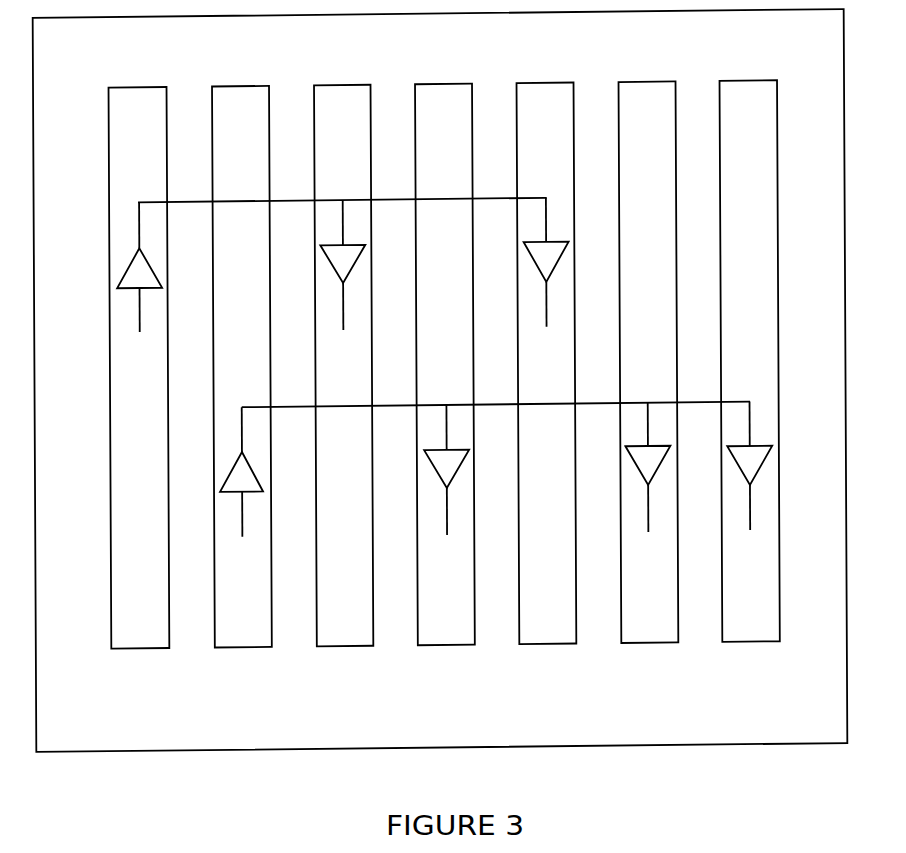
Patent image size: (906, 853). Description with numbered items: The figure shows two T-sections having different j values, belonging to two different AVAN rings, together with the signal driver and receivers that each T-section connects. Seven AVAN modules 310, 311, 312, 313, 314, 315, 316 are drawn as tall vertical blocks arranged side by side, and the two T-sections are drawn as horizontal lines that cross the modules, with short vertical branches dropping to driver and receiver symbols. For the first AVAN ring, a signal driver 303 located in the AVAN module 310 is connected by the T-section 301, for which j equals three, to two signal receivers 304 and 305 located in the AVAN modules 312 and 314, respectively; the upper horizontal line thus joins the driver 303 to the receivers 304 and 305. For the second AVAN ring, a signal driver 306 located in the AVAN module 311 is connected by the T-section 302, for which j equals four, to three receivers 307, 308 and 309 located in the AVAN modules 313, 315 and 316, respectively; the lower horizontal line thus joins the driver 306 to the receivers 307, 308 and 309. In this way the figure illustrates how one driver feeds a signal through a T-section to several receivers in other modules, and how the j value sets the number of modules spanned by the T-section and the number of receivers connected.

The T-section 301 is at (494, 199).
The T-section 302 is at (695, 405).
The signal driver 303 is at (126, 268).
The signal receiver 304 is at (331, 261).
The signal receiver 305 is at (534, 261).
The signal driver 306 is at (227, 472).
The receiver 307 is at (433, 468).
The receiver 308 is at (635, 467).
The receiver 309 is at (762, 469).
The AVAN module 310 is at (142, 645).
The AVAN module 311 is at (242, 645).
The AVAN module 312 is at (346, 645).
The AVAN module 313 is at (447, 645).
The AVAN module 314 is at (547, 645).
The AVAN module 315 is at (649, 645).
The AVAN module 316 is at (751, 645).